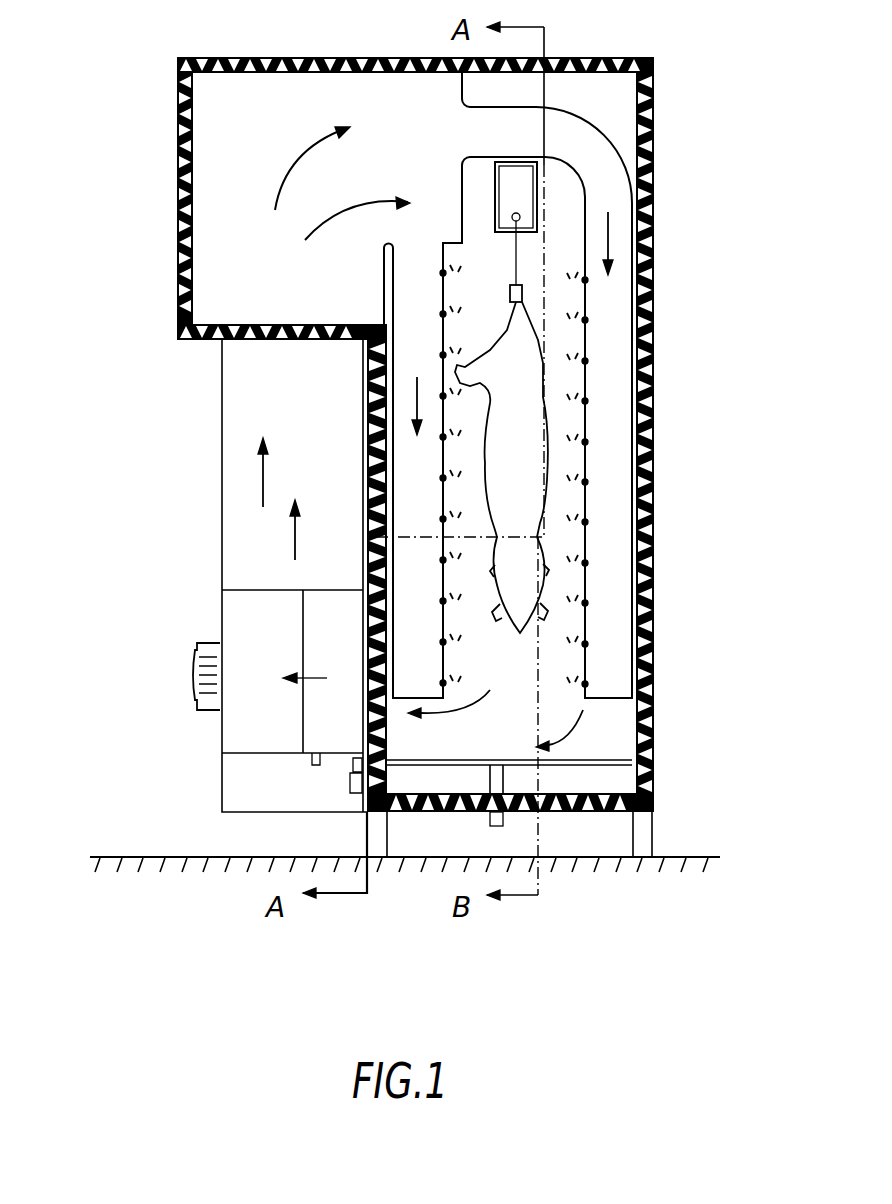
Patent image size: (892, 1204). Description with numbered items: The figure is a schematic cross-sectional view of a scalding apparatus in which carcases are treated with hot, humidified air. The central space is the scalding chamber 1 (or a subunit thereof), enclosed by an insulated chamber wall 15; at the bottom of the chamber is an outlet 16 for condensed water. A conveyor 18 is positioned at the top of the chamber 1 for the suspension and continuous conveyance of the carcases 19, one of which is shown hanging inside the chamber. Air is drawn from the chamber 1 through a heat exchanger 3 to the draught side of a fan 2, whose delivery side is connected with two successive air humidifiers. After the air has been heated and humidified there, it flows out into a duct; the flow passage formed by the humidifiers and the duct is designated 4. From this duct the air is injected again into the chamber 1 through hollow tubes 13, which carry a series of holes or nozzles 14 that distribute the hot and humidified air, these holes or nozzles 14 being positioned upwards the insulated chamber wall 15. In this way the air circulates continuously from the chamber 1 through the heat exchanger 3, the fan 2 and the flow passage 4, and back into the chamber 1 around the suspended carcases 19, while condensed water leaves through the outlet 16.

The scalding chamber 1 is at (527, 662).
The fan 2 is at (200, 704).
The heat exchanger 3 is at (337, 733).
The flow passage 4 is at (230, 544).
The hollow tubes 13 is at (403, 446).
The holes or nozzles 14 is at (444, 519).
The insulated chamber wall 15 is at (366, 373).
The outlet 16 is at (492, 819).
The conveyor 18 is at (530, 186).
The carcases 19 is at (523, 361).